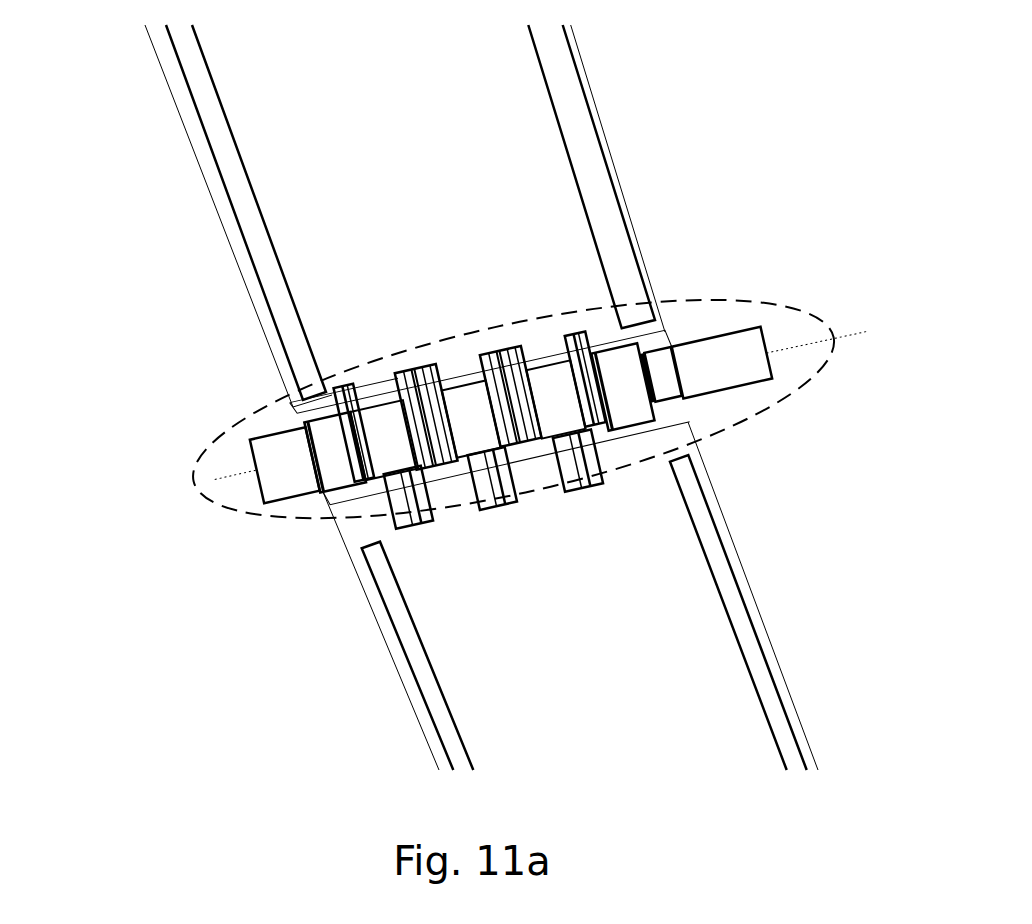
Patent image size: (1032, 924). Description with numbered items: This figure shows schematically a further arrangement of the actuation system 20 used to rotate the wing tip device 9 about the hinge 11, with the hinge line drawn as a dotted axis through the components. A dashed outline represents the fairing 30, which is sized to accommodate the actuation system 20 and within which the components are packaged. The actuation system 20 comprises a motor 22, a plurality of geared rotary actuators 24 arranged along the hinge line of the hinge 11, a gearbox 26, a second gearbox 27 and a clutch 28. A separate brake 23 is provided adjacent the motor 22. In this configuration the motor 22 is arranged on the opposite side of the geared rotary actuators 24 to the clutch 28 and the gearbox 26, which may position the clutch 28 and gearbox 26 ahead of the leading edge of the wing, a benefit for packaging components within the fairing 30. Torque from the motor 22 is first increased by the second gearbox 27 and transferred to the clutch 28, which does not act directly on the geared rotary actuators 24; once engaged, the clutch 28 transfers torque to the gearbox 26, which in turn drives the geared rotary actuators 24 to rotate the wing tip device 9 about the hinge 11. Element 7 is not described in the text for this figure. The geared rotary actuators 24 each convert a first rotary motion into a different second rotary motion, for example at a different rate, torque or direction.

The first arm 7 is at (527, 115).
The wing tip device 9 is at (683, 617).
The hinge 11 is at (222, 462).
The actuation system 20 is at (236, 505).
The motor 22 is at (712, 363).
The brake 23 is at (657, 372).
The geared rotary actuator 24 is at (382, 428).
The gearbox 26 is at (330, 470).
The second gearbox 27 is at (635, 405).
The clutch 28 is at (283, 485).
The fairing 30 is at (813, 277).